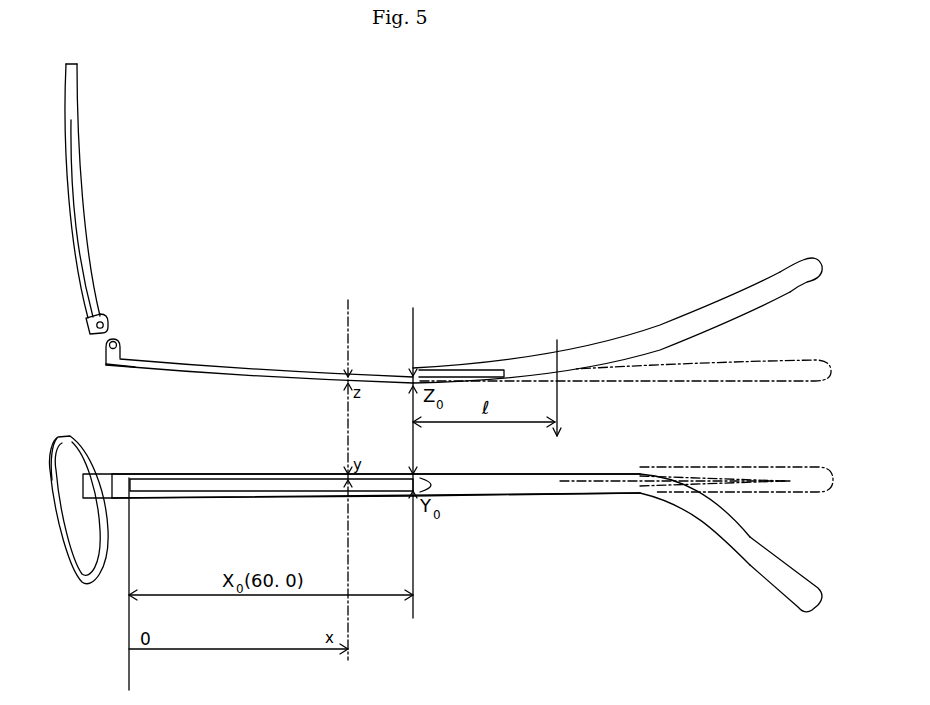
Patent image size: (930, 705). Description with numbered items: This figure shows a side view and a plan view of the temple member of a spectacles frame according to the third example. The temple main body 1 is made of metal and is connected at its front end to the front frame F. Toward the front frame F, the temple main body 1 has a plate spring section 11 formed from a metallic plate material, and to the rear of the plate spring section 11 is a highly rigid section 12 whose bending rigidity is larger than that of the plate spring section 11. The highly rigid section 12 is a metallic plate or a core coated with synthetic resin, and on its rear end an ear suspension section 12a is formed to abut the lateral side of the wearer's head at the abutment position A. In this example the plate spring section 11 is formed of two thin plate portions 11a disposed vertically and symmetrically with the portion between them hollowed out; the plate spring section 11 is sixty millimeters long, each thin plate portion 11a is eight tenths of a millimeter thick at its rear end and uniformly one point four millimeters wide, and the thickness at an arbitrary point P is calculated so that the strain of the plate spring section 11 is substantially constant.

The temple main body 1 is at (517, 494).
The plate spring section 11 is at (178, 375).
The thin plate portion 11a is at (200, 478).
The highly rigid section 12 is at (648, 328).
The ear suspension section 12a is at (723, 290).
The front frame F is at (82, 181).
The abutment position A is at (557, 343).
The arbitrary point P is at (348, 381).